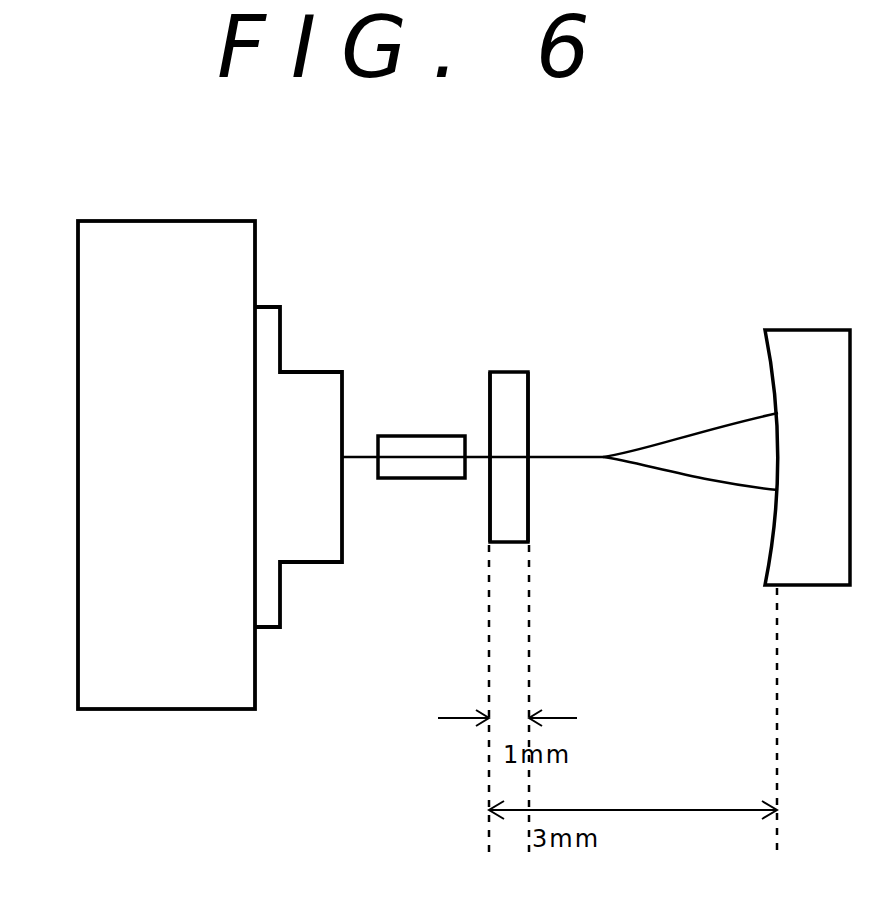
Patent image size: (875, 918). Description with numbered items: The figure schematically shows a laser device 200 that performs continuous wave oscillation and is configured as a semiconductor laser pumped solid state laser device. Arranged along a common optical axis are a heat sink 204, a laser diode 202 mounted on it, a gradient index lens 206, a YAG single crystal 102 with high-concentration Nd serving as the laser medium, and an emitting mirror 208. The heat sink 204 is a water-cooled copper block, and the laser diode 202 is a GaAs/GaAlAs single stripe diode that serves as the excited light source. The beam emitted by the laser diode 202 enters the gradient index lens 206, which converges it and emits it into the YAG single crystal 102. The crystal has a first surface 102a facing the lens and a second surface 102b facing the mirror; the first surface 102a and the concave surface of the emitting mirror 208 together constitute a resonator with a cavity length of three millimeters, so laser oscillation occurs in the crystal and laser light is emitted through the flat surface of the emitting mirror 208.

The laser device 200 is at (667, 133).
The heat sink 204 is at (178, 221).
The laser diode 202 is at (283, 333).
The gradient index lens 206 is at (393, 435).
The YAG single crystal with high-concentration Nd 102 is at (508, 372).
The first surface 102a is at (490, 527).
The second surface 102b is at (528, 515).
The emitting mirror 208 is at (787, 330).